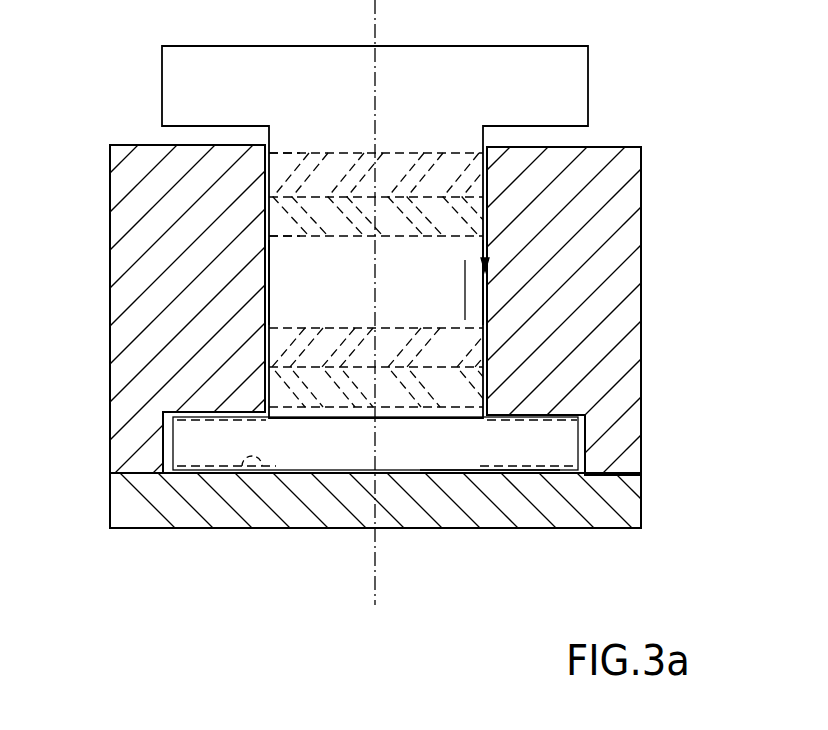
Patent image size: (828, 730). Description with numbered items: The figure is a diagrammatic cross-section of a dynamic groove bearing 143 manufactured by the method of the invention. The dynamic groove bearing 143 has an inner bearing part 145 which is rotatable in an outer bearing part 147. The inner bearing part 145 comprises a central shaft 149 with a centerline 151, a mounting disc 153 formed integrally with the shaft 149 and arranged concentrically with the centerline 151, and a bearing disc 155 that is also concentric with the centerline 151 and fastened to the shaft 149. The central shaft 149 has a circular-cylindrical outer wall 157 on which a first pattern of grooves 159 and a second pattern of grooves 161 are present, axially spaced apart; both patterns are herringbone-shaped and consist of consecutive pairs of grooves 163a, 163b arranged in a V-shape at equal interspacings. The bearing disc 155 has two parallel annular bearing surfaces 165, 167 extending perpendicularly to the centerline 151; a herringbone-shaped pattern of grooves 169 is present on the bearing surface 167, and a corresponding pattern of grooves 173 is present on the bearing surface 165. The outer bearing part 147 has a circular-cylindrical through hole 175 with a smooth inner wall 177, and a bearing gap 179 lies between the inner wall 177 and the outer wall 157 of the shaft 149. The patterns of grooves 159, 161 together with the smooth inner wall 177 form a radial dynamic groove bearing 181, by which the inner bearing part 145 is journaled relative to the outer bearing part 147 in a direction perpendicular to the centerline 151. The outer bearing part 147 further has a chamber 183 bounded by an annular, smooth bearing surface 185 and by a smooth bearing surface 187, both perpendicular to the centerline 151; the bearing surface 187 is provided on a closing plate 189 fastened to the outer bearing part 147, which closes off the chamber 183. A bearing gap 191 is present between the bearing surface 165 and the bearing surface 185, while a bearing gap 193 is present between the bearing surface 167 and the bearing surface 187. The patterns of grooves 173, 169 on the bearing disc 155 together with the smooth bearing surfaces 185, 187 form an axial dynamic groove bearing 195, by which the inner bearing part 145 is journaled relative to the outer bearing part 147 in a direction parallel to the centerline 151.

The dynamic groove bearing 143 is at (172, 589).
The inner bearing part 145 is at (603, 82).
The outer bearing part 147 is at (662, 423).
The central shaft 149 is at (465, 288).
The centerline 151 is at (378, 8).
The mounting disc 153 is at (520, 66).
The bearing disc 155 is at (553, 454).
The circular-cylindrical outer wall 157 is at (484, 249).
The first pattern of grooves 159 is at (405, 152).
The second pattern of grooves 161 is at (398, 326).
The groove 163a is at (323, 140).
The groove 163b is at (317, 238).
The annular bearing surface 165 is at (506, 422).
The annular bearing surface 167 is at (287, 471).
The pattern of grooves 169 is at (253, 472).
The pattern of grooves 173 is at (199, 421).
The circular-cylindrical through hole 175 is at (488, 312).
The smooth inner wall 177 is at (530, 316).
The bearing gap 179 is at (493, 264).
The radial dynamic groove bearing 181 is at (280, 292).
The chamber 183 is at (167, 465).
The annular smooth bearing surface 185 is at (172, 412).
The smooth bearing surface 187 is at (220, 476).
The closing plate 189 is at (415, 518).
The bearing gap 191 is at (541, 413).
The bearing gap 193 is at (305, 475).
The axial dynamic groove bearing 195 is at (449, 462).